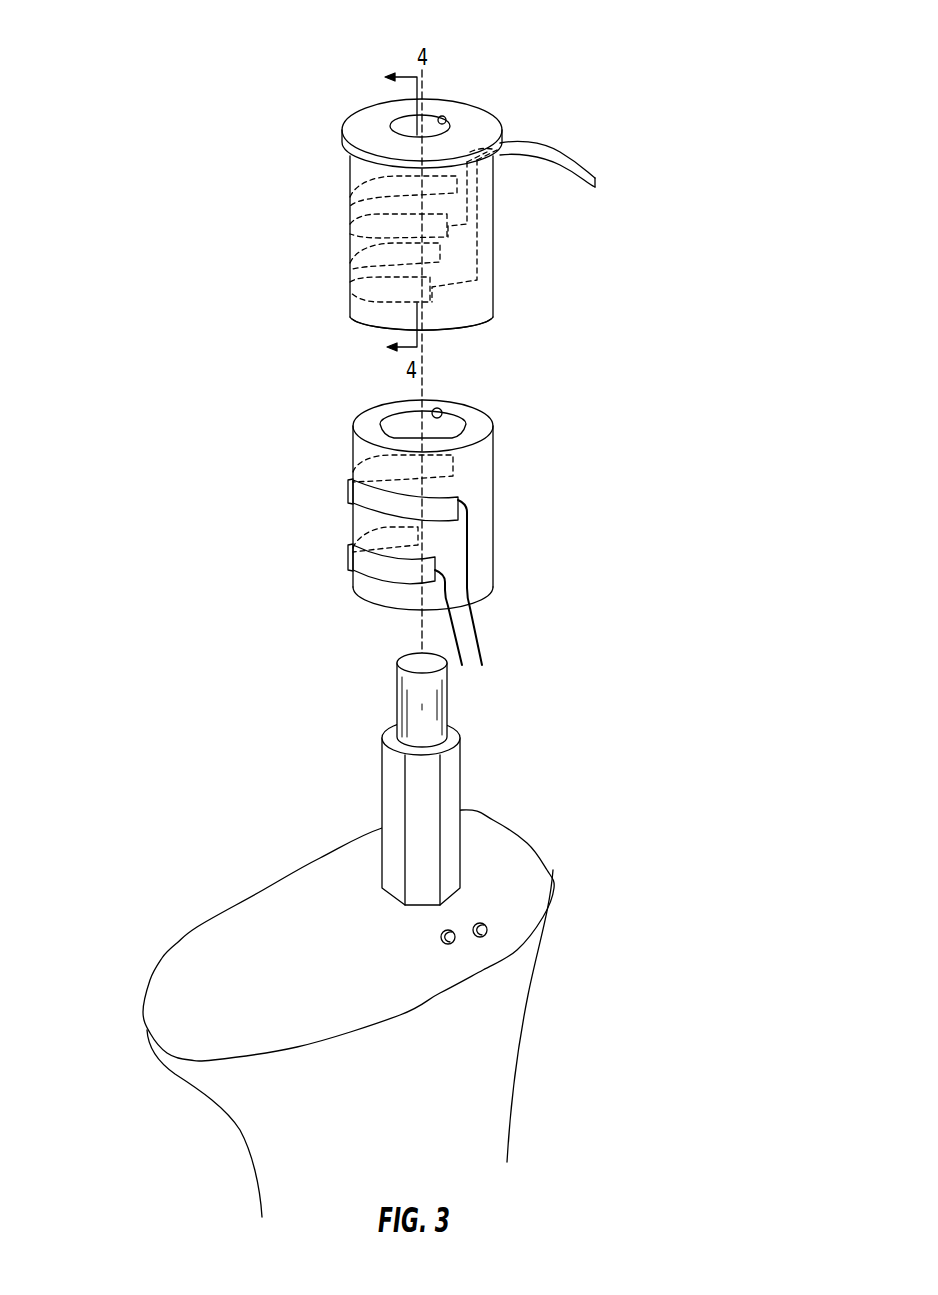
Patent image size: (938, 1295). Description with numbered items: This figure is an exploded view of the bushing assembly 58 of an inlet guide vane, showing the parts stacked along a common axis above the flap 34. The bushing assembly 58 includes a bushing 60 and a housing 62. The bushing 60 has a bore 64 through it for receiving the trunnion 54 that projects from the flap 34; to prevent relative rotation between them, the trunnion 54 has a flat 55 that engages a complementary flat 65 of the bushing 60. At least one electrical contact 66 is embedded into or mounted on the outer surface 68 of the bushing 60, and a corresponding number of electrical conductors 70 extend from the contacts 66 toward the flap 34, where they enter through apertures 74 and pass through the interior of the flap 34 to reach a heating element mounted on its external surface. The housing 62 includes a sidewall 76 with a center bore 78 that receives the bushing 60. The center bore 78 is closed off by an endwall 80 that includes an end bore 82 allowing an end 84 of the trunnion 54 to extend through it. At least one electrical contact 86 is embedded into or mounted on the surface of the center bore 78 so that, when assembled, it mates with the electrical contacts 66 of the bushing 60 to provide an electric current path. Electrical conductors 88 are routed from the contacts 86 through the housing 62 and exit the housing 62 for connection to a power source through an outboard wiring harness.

The flap 34 is at (365, 1013).
The trunnion 54 is at (445, 766).
The flat 55 is at (428, 822).
The bushing assembly 58 is at (514, 344).
The bushing 60 is at (424, 501).
The housing 62 is at (472, 207).
The bore 64 is at (441, 409).
The flat 65 is at (430, 436).
The electrical contact 66 is at (362, 503).
The outer surface 68 is at (483, 536).
The electrical conductors 70 is at (470, 620).
The apertures 74 is at (489, 928).
The sidewall 76 is at (382, 238).
The center bore 78 is at (377, 331).
The endwall 80 is at (465, 95).
The end bore 82 is at (447, 117).
The end 84 is at (397, 656).
The electrical contact 86 is at (350, 200).
The electrical conductors 88 is at (560, 150).